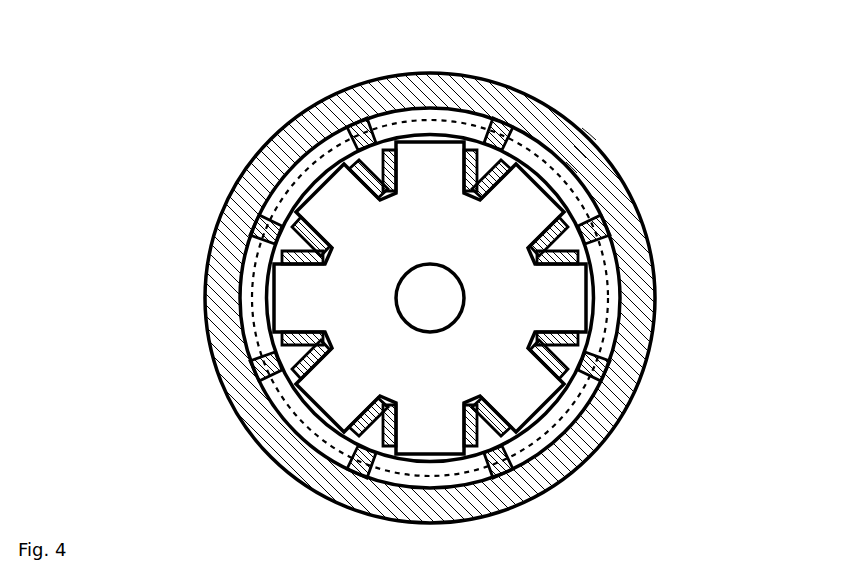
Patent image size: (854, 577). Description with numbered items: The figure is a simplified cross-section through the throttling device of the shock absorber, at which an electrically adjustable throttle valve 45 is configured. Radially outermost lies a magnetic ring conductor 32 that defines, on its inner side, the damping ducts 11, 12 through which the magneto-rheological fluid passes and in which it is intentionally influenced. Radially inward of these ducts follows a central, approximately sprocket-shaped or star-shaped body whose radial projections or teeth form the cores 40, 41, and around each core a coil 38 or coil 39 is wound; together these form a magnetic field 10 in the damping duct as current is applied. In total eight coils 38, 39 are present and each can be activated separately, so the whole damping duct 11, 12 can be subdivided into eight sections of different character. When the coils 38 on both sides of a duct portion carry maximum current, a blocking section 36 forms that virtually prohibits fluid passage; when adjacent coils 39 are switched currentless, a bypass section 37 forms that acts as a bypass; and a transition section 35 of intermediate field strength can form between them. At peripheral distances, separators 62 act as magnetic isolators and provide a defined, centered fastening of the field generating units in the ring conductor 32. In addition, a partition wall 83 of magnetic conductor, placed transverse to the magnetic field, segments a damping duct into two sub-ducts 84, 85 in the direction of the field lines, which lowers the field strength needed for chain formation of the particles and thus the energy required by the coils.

The magnetic field 10 is at (340, 112).
The damping duct 11 is at (455, 120).
The damping duct 12 is at (630, 350).
The magnetic ring conductor 32 is at (312, 138).
The transition section 35 is at (565, 208).
The blocking section 36 is at (270, 172).
The bypass section 37 is at (650, 312).
The coil 38 is at (385, 118).
The coil 39 is at (630, 245).
The core 40 is at (320, 175).
The core 41 is at (560, 258).
The throttle valve 45 is at (165, 85).
The separator 62 is at (360, 128).
The partition wall 83 is at (590, 150).
The sub-duct 84 is at (600, 175).
The sub-duct 85 is at (615, 185).